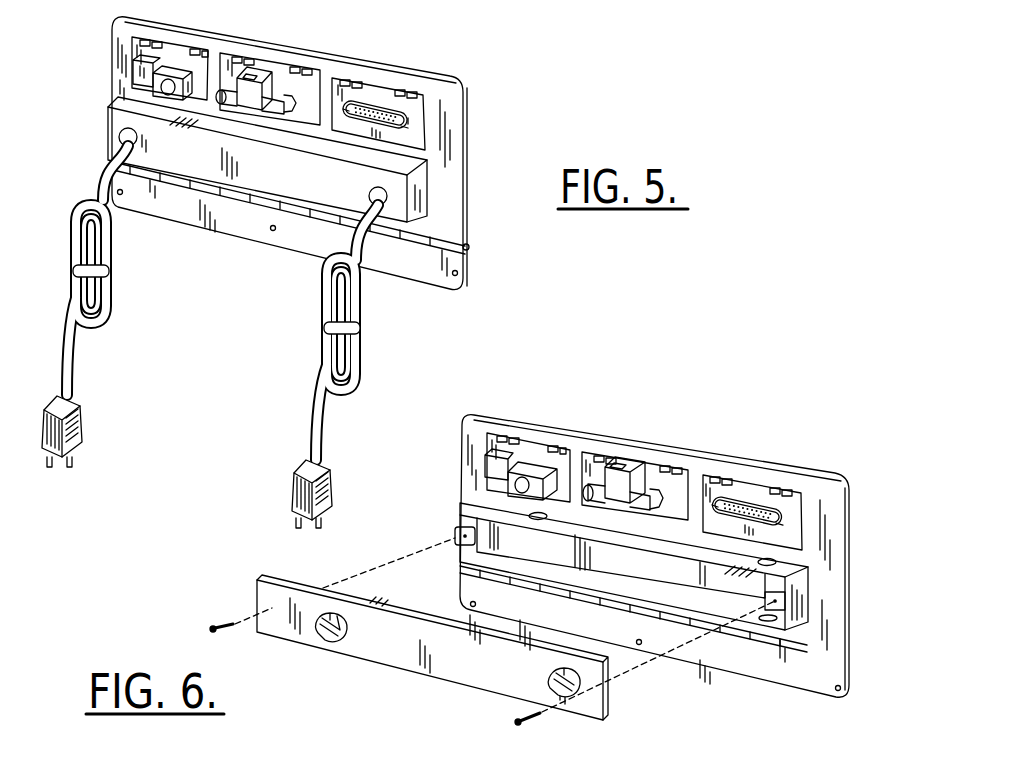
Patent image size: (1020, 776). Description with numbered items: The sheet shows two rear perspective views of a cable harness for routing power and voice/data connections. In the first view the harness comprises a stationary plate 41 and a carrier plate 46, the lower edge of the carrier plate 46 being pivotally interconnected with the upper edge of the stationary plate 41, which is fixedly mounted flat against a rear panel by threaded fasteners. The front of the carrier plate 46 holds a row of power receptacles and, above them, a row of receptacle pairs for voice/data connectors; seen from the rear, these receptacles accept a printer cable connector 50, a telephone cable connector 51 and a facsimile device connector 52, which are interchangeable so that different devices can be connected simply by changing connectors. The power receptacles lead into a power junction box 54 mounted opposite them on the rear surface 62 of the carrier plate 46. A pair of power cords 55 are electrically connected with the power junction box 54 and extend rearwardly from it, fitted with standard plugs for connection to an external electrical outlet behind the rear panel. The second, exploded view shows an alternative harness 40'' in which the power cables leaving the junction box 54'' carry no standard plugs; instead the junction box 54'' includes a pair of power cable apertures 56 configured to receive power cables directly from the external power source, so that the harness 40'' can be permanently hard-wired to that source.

In FIG. 6, the cable harness 40'' is at (654, 541).
In FIG. 5, the stationary plate 41 is at (466, 276).
In FIG. 5, the carrier plate 46 is at (450, 125).
In FIG. 5, the printer cable connector 50 is at (373, 97).
In FIG. 5, the telephone cable connector 51 is at (290, 77).
In FIG. 5, the facsimile device connector 52 is at (208, 58).
In FIG. 5, the power junction box 54 is at (314, 159).
In FIG. 6, the junction box 54'' is at (631, 612).
In FIG. 5, the power cords 55 is at (73, 382).
In FIG. 6, the power cable apertures 56 is at (325, 642).
In FIG. 5, the rear surface 62 is at (447, 223).